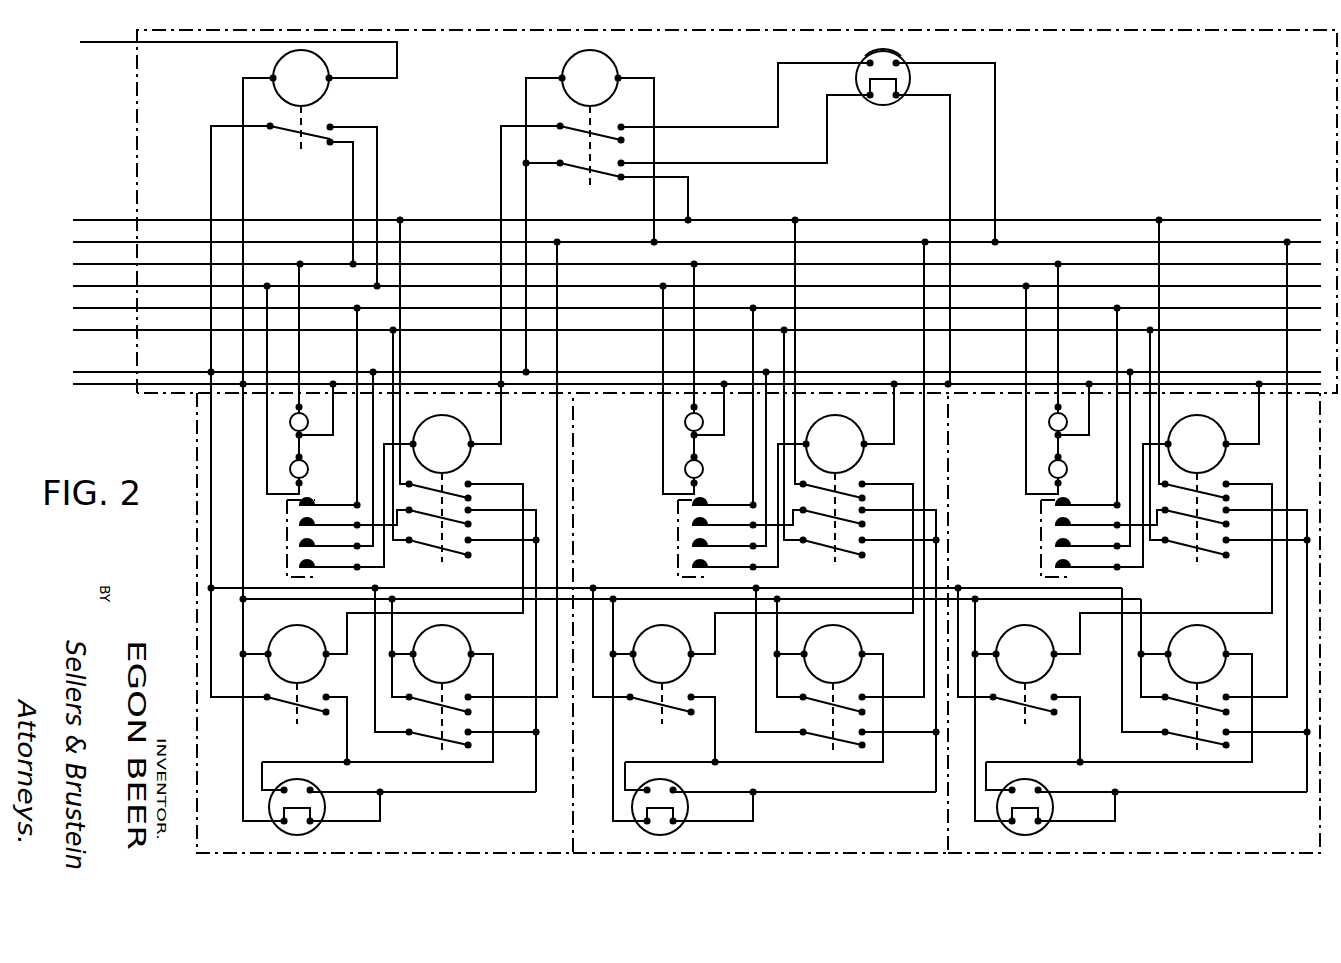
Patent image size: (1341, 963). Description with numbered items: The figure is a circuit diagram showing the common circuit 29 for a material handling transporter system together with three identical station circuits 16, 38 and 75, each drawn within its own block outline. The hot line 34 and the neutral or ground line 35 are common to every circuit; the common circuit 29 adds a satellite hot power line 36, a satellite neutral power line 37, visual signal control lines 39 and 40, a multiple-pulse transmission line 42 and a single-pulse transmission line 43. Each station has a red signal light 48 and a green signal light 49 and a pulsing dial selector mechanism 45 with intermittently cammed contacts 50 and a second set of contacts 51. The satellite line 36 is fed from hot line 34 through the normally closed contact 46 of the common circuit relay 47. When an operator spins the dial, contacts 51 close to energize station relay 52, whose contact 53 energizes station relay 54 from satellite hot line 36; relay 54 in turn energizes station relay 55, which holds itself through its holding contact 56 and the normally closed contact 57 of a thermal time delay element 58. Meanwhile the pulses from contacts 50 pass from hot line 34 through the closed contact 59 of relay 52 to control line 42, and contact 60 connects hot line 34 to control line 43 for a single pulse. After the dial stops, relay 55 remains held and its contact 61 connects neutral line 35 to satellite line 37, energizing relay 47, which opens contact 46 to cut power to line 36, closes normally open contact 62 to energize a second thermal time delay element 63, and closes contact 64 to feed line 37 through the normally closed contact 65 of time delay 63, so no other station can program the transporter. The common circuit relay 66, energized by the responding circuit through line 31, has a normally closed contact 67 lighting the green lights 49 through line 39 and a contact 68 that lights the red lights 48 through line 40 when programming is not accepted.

The station circuit 16 is at (477, 853).
The station circuit 38 is at (749, 853).
The station circuit 75 is at (1098, 853).
The common circuit 29 is at (133, 139).
The line 31 is at (100, 42).
The hot line 34 is at (73, 372).
The neutral or ground line 35 is at (73, 384).
The satellite hot power line 36 is at (73, 220).
The satellite neutral power line 37 is at (73, 242).
The visual signal control line 39 is at (73, 264).
The visual signal control line 40 is at (73, 286).
The multiple-pulse transmission line 42 is at (73, 308).
The single-pulse transmission line 43 is at (73, 330).
The pulsing dial selector mechanism 45 is at (287, 524).
The normally closed contact 46 is at (621, 178).
The common circuit relay 47 is at (613, 65).
The red signal light 48 is at (308, 470).
The green signal light 49 is at (308, 426).
The intermittently cammed contacts 50 is at (318, 510).
The second set of contacts 51 is at (300, 550).
The station relay 52 is at (455, 434).
The contact 53 is at (468, 482).
The station relay 54 is at (290, 636).
The station relay 55 is at (463, 641).
The holding contact 56 is at (415, 742).
The normally closed contact 57 is at (300, 779).
The thermal time delay element 58 is at (276, 821).
The contact 59 is at (472, 520).
The contact 60 is at (432, 544).
The contact 61 is at (420, 704).
The normally open contact 62 is at (621, 164).
The thermal time delay element 63 is at (856, 80).
The contact 64 is at (619, 127).
The normally closed contact 65 is at (893, 60).
The common circuit relay 66 is at (278, 62).
The normally closed contact 67 is at (330, 142).
The contact 68 is at (330, 127).